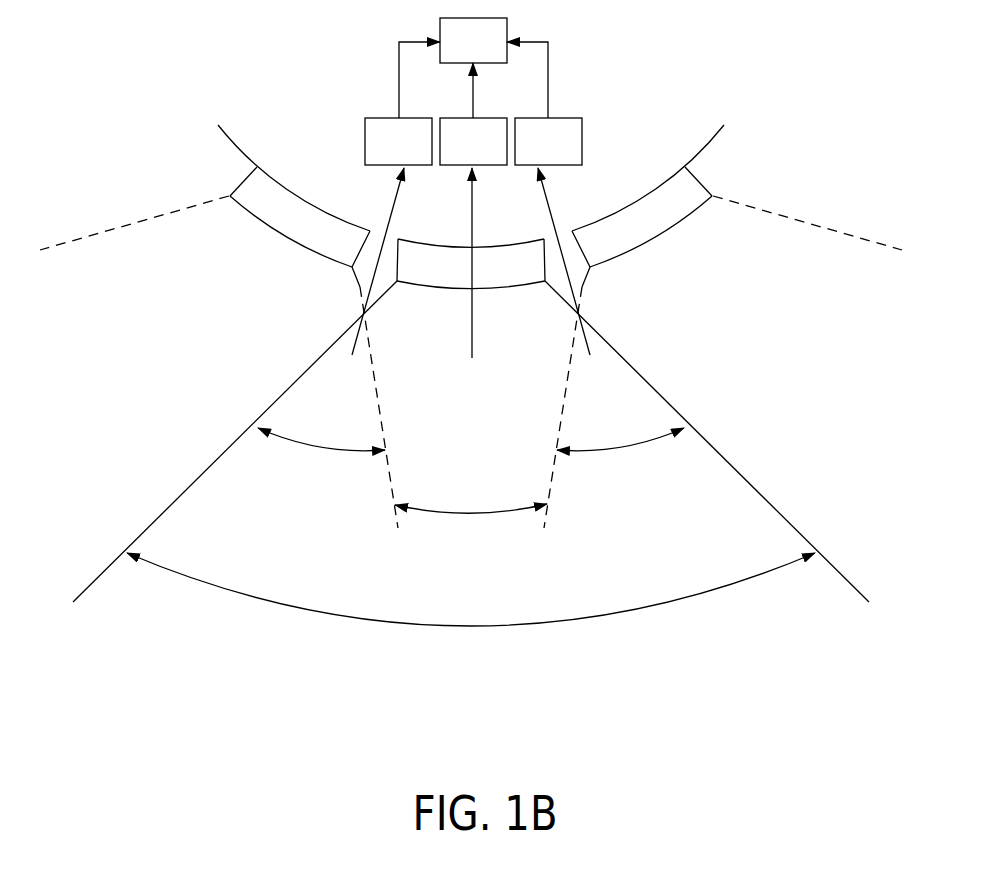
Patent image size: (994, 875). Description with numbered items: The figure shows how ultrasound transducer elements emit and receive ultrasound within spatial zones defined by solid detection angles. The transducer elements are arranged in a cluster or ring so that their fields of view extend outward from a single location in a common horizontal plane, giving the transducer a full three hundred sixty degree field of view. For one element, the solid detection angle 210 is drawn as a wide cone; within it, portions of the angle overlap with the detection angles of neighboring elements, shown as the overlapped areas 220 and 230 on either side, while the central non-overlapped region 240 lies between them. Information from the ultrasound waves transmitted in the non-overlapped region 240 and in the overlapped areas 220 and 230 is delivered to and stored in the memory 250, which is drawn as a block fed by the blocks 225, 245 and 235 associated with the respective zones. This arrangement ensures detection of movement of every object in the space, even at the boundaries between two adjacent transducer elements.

The solid detection angle 210 is at (480, 628).
The overlapped area 220 is at (318, 447).
The first sensor 225 is at (380, 152).
The overlapped area 230 is at (615, 450).
The second sensor 235 is at (530, 152).
The non-overlapped region 240 is at (469, 513).
The third sensor 245 is at (455, 152).
The memory 250 is at (455, 52).